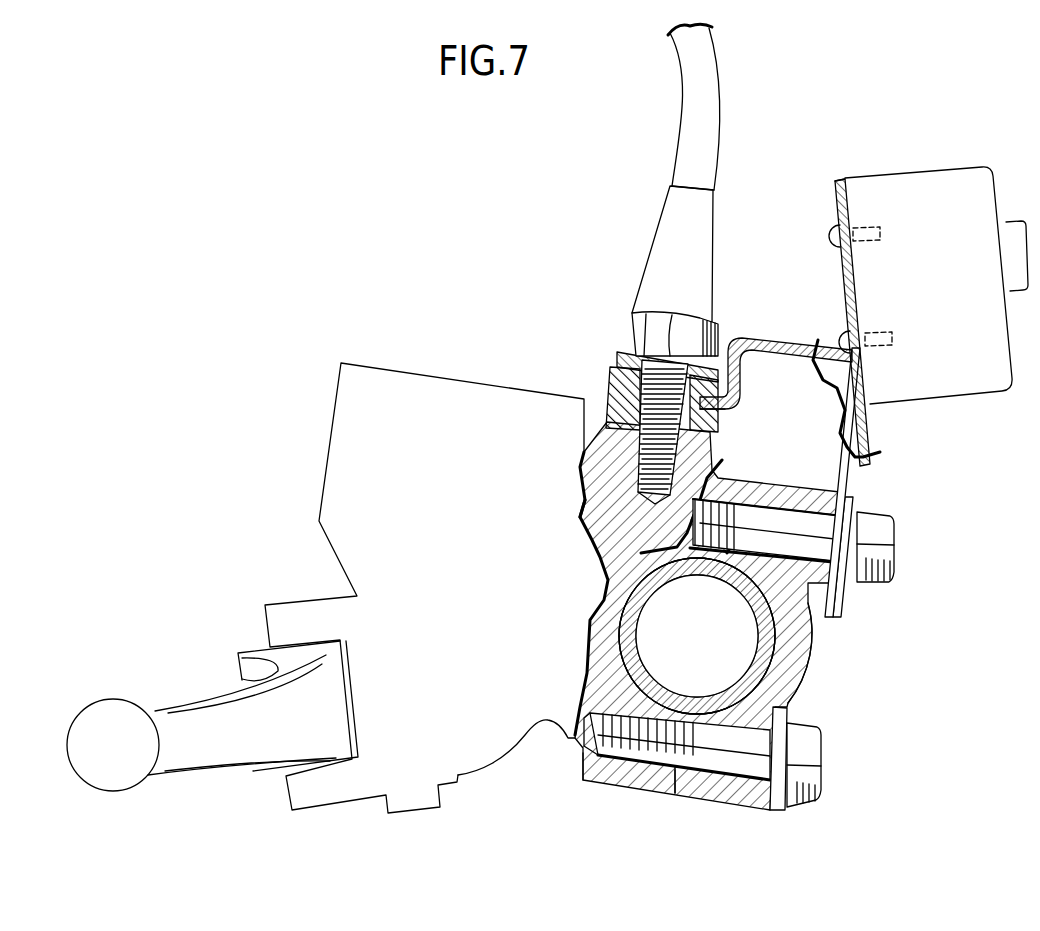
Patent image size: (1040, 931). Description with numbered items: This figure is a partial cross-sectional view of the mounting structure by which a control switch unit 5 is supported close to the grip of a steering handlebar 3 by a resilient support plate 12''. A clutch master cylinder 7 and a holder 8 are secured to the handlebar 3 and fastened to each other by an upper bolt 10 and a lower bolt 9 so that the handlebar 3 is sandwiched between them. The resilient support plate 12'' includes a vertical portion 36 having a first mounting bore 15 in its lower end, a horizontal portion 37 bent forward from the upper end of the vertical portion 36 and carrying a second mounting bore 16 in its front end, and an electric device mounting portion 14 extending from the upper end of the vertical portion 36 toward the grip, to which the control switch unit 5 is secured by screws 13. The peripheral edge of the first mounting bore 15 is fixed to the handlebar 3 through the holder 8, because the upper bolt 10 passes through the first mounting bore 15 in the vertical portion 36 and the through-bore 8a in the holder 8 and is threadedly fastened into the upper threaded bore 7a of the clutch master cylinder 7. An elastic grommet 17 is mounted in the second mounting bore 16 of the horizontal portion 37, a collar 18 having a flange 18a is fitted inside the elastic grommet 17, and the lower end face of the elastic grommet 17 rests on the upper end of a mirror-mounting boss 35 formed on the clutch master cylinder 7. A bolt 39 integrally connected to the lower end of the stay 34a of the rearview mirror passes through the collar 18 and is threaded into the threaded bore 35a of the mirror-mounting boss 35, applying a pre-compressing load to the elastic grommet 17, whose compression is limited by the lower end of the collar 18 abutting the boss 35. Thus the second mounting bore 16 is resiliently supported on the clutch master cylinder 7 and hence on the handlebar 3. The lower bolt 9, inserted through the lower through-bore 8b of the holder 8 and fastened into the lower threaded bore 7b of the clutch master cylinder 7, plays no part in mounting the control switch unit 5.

The steering handlebar 3 is at (762, 652).
The control switch unit 5 is at (937, 295).
The clutch master cylinder 7 is at (472, 594).
The upper threaded bore 7a is at (697, 548).
The lower threaded bore 7b is at (610, 777).
The holder 8 is at (807, 662).
The upper through-bore 8a is at (743, 548).
The lower through-bore 8b is at (720, 760).
The lower bolt 9 is at (805, 768).
The upper bolt 10 is at (882, 527).
The resilient support plate 12'' is at (817, 322).
The screws 13 is at (829, 236).
The electric device mounting portion 14 is at (848, 212).
The first mounting bore 15 is at (858, 548).
The second mounting bore 16 is at (612, 353).
The elastic grommet 17 is at (742, 337).
The collar 18 is at (680, 318).
The flange 18a is at (630, 312).
The stay 34a is at (712, 108).
The mirror-mounting boss 35 is at (600, 425).
The threaded bore 35a is at (582, 520).
The vertical portion 36 is at (855, 476).
The horizontal portion 37 is at (713, 402).
The bolt 39 is at (585, 427).